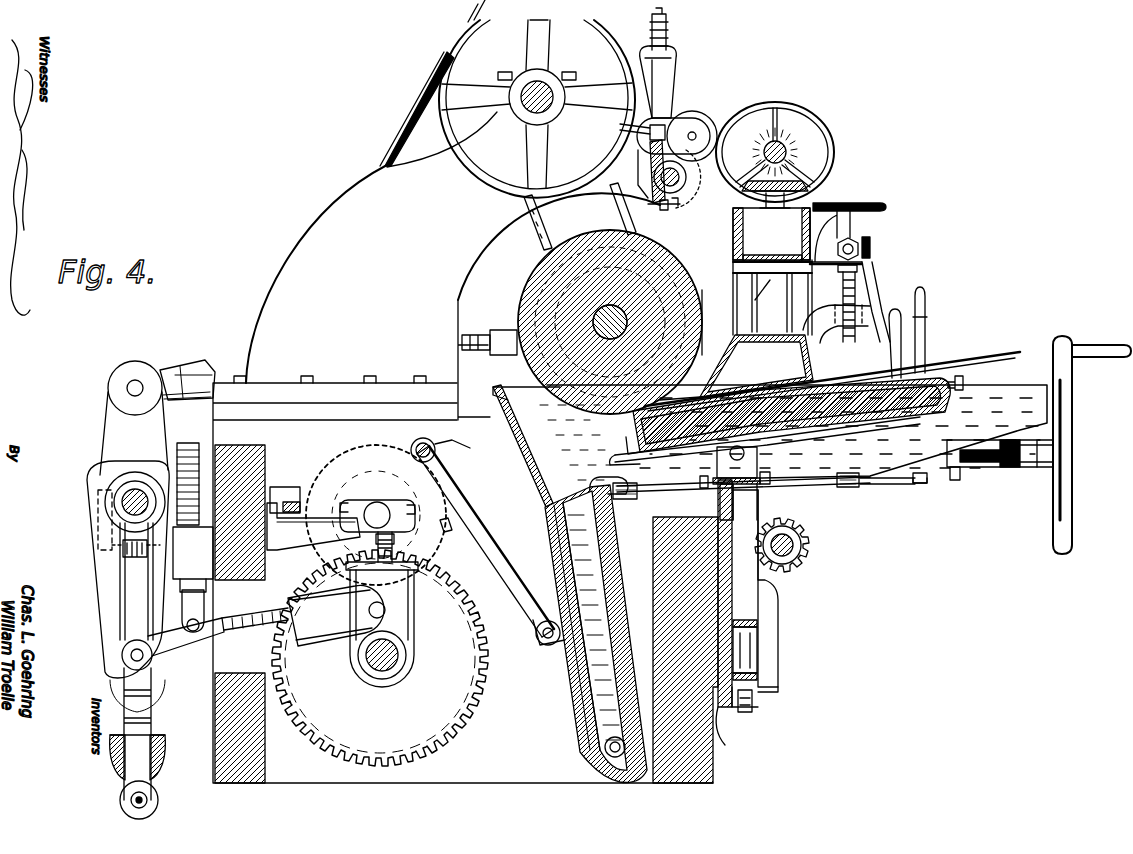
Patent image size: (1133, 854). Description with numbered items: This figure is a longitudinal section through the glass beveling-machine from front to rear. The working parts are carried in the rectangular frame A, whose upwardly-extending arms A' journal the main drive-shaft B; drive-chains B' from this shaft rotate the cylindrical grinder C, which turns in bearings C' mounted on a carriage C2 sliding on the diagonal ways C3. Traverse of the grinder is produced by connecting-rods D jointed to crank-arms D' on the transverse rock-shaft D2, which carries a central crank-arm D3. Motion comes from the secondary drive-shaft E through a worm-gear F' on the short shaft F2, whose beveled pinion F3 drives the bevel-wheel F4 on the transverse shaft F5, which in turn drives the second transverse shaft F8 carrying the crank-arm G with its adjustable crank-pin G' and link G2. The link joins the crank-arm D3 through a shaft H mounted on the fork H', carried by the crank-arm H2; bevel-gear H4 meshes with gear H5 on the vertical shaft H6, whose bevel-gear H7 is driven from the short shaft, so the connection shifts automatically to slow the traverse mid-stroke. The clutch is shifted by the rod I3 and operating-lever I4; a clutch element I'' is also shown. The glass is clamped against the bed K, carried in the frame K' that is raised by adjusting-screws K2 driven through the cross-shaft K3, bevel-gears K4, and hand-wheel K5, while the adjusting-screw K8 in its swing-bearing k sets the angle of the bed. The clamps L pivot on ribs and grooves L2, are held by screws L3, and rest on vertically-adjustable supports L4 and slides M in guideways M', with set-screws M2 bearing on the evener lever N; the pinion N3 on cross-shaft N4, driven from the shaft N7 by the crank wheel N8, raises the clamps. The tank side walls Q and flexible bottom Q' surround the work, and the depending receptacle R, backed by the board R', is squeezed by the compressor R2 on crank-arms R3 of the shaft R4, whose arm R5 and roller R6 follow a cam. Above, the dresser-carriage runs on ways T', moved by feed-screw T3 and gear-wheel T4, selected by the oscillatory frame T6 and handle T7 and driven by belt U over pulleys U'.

The frame A is at (465, 579).
The overhang or upwardly-extending arms A' is at (453, 236).
The main drive-shaft B is at (537, 99).
The drive-chains B' is at (580, 216).
The grinder C is at (594, 322).
The bearings C' is at (585, 322).
The carriage C2 is at (706, 300).
The ways C3 is at (512, 352).
The connecting-rods D is at (192, 370).
The crank-arms D' is at (137, 378).
The transverse rock-shaft D2 is at (120, 505).
The central crank-arm D3 is at (100, 585).
The secondary drive-shaft E is at (192, 636).
The worm-gear F' is at (193, 501).
The short shaft F2 is at (268, 480).
The beveled pinion F3 is at (504, 694).
The bevel-wheel F4 is at (416, 441).
The transverse shaft F5 is at (377, 502).
The second transverse shaft F8 is at (378, 680).
The central crank-arm G is at (368, 624).
The adjustable crank-pin G' is at (367, 615).
The link or adjustable connecting-rod G2 is at (255, 636).
The shaft H is at (95, 596).
The link or fork H' is at (117, 720).
The crank-arm H2 is at (158, 804).
The bevel-gear H4 is at (166, 760).
The bevel-gear H5 is at (160, 730).
The vertical shaft H6 is at (122, 500).
The bevel-gear H7 is at (120, 548).
The post I'' is at (890, 329).
The shifting rod I3 is at (968, 484).
The operating-lever I4 is at (927, 294).
The bed K is at (736, 367).
The frame K' is at (758, 271).
The adjusting-screws K2 is at (828, 304).
The cross-shaft K3 is at (780, 144).
The bevel-gears K4 is at (800, 146).
The hand-wheel K5 is at (834, 156).
The adjusting-screw K8 is at (872, 252).
The swing-bearing k is at (782, 282).
The clamps L is at (818, 436).
The ribs and grooves L2 is at (864, 440).
The screws L3 is at (958, 374).
The vertically-adjustable supports L4 is at (770, 483).
The slides M is at (771, 593).
The guideways M' is at (739, 738).
The set-screws M2 is at (756, 712).
The evener or equal-arm lever N is at (762, 654).
The pinion N3 is at (806, 530).
The cross-shaft N4 is at (800, 546).
The shaft N7 is at (1018, 467).
The hand or crank wheel N8 is at (1092, 445).
The tank side walls Q is at (793, 432).
The flexible tank bottom Q' is at (561, 462).
The depending receptacle R is at (596, 634).
The supporting plate or board R' is at (570, 626).
The movable board or compressor R2 is at (580, 720).
The crank-arms R3 is at (486, 512).
The transverse shaft R4 is at (448, 452).
The arm R5 is at (454, 508).
The roller R6 is at (604, 758).
The ways T' is at (669, 192).
The feed-screw T3 is at (680, 198).
The gear-wheel T4 is at (710, 156).
The oscillatory frame T6 is at (672, 96).
The handle T7 is at (668, 29).
The belt U is at (679, 117).
The pulleys U' is at (703, 133).